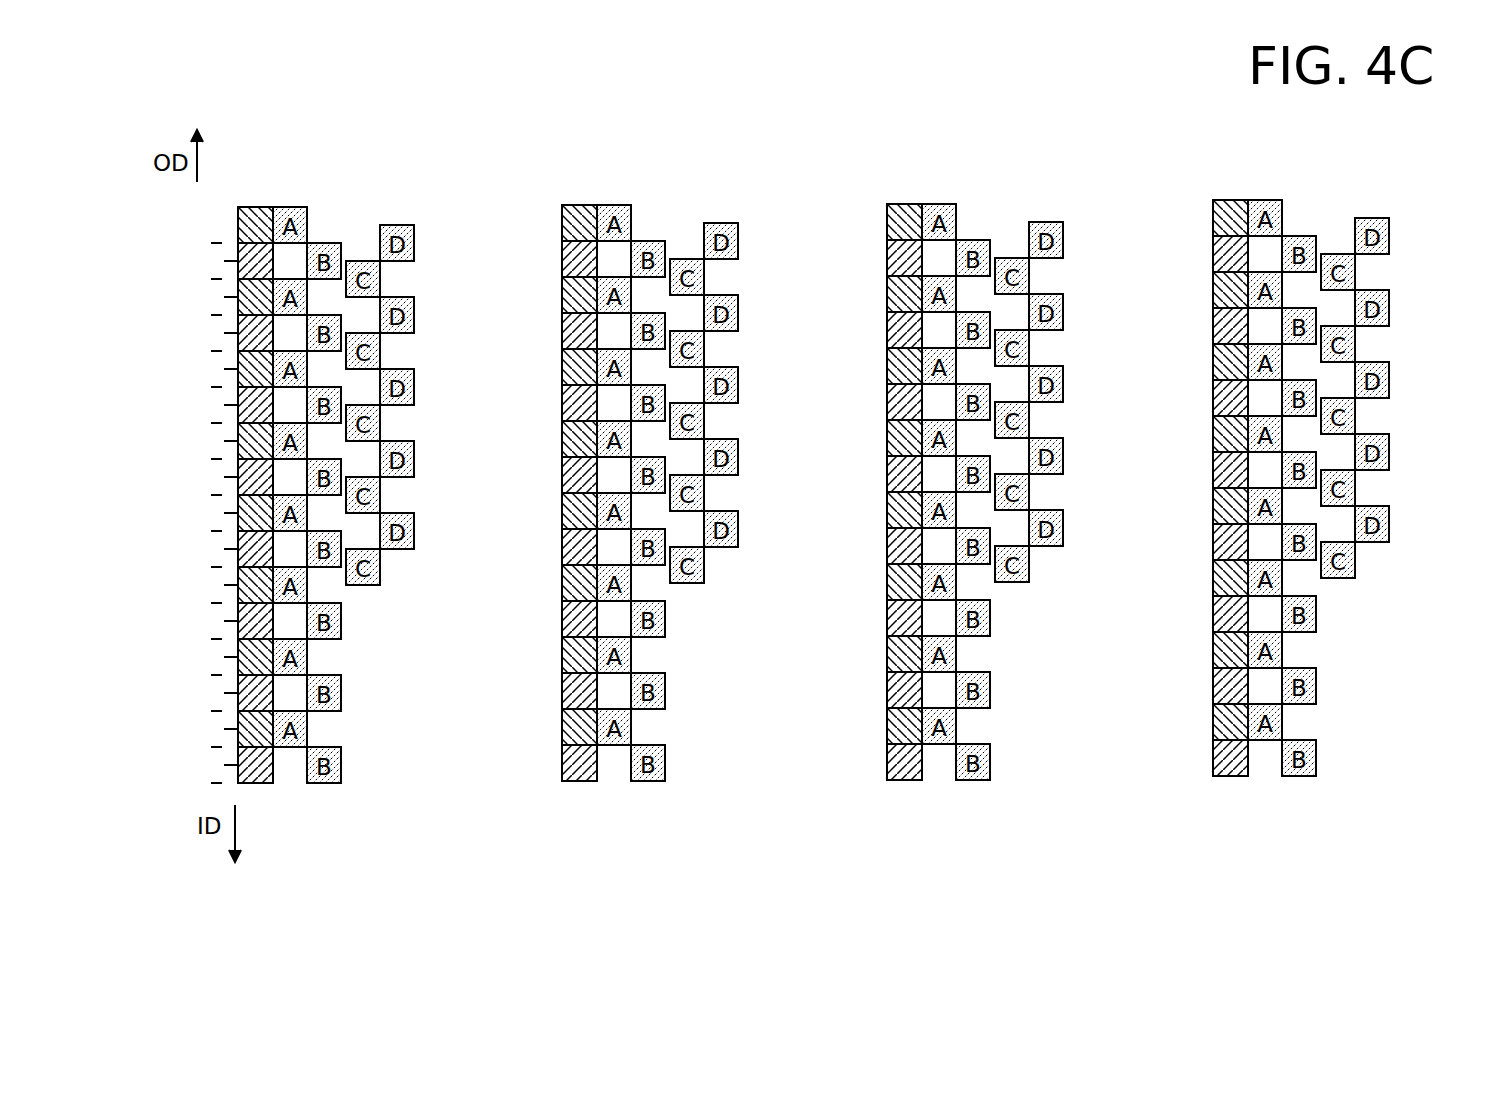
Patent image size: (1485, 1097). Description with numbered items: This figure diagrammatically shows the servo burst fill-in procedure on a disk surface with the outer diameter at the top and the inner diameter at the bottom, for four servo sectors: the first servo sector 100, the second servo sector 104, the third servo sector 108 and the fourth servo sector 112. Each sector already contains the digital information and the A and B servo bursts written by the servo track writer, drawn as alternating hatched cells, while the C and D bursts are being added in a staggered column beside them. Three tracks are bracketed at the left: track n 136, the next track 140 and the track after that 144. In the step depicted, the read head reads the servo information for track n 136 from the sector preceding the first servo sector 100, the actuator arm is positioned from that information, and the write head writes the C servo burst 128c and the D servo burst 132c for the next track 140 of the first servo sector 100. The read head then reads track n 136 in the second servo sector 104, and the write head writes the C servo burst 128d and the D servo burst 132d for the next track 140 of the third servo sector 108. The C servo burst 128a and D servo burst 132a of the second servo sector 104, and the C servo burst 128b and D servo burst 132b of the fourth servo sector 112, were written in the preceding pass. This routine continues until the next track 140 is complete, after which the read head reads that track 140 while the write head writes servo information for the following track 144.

The first servo sector 100 is at (376, 456).
The second servo sector 104 is at (701, 454).
The third servo sector 108 is at (1026, 453).
The fourth servo sector 112 is at (1337, 449).
The C servo burst 128a is at (734, 446).
The C servo burst 128b is at (1387, 442).
The C servo burst 128c is at (367, 585).
The C servo burst 128d is at (1059, 445).
The D servo burst 132a is at (780, 385).
The D servo burst 132b is at (1416, 407).
The D servo burst 132c is at (415, 528).
The D servo burst 132d is at (1105, 384).
The track n 136 is at (210, 443).
The track n+1 140 is at (210, 518).
The track n+2 144 is at (210, 588).